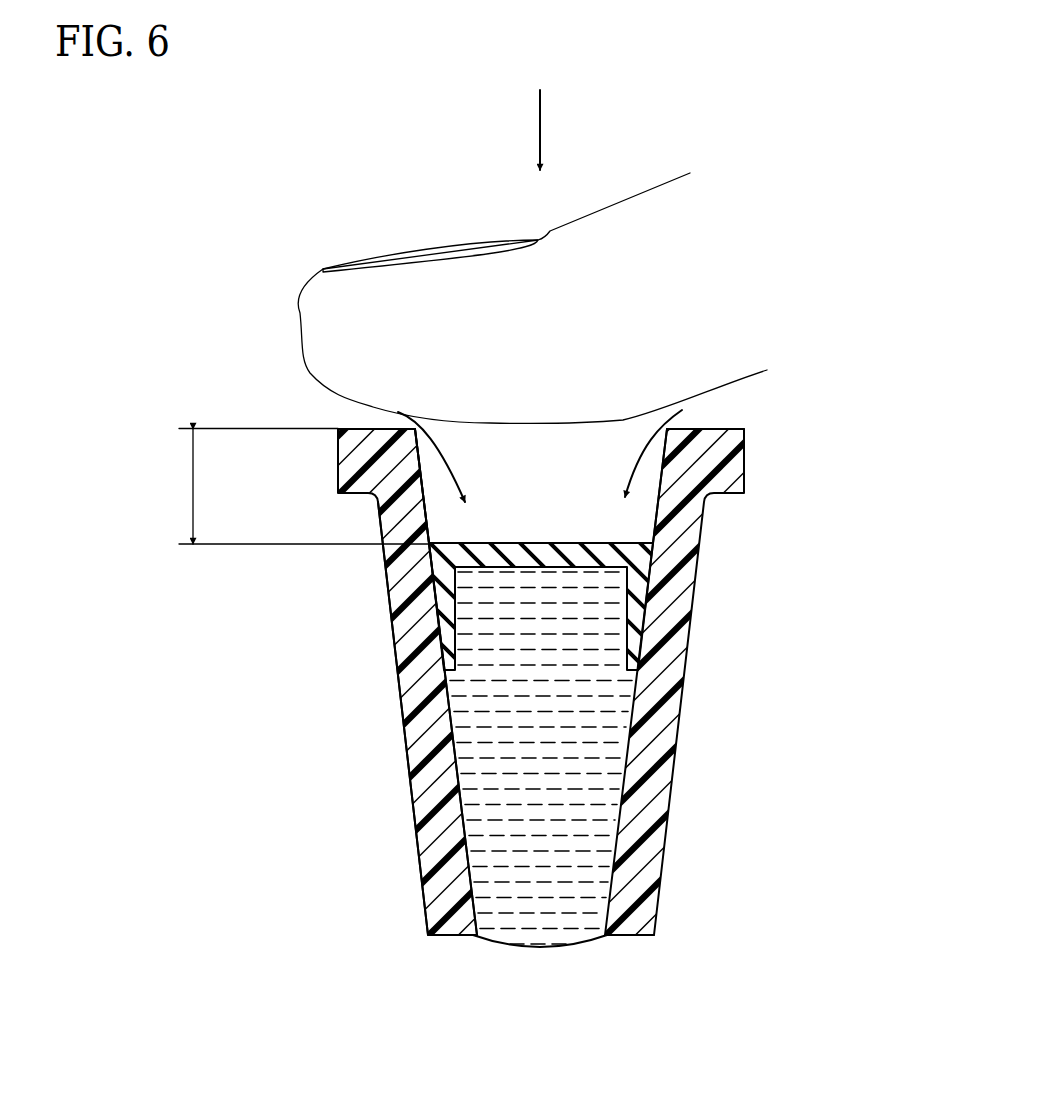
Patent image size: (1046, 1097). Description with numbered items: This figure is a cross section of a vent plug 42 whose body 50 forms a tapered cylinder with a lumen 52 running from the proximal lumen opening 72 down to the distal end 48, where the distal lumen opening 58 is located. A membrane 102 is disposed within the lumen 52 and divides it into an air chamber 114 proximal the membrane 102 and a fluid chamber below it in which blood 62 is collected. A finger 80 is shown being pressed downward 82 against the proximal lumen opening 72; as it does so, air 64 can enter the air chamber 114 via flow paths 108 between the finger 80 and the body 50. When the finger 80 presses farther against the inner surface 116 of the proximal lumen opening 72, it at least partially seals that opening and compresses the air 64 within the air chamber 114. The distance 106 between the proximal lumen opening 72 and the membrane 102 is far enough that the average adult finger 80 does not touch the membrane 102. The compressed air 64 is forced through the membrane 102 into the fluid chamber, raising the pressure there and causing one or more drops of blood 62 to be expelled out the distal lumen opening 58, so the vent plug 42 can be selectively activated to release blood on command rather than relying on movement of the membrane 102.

The vent plug 42 is at (673, 708).
The distal end 48 is at (630, 938).
The body 50 is at (433, 836).
The lumen 52 is at (445, 780).
The distal lumen opening 58 is at (510, 947).
The blood 62 is at (593, 780).
The air 64 is at (512, 462).
The proximal lumen opening 72 is at (420, 432).
The finger 80 is at (649, 186).
The downward pressing 82 is at (537, 103).
The membrane 102 is at (637, 605).
The distance 106 is at (192, 478).
The flow paths 108 is at (410, 420).
The air chamber 114 is at (583, 465).
The inner surface 116 is at (667, 428).